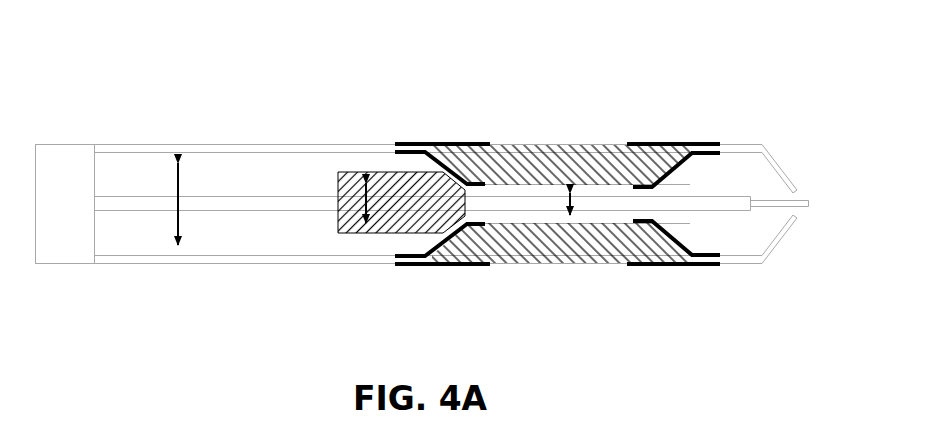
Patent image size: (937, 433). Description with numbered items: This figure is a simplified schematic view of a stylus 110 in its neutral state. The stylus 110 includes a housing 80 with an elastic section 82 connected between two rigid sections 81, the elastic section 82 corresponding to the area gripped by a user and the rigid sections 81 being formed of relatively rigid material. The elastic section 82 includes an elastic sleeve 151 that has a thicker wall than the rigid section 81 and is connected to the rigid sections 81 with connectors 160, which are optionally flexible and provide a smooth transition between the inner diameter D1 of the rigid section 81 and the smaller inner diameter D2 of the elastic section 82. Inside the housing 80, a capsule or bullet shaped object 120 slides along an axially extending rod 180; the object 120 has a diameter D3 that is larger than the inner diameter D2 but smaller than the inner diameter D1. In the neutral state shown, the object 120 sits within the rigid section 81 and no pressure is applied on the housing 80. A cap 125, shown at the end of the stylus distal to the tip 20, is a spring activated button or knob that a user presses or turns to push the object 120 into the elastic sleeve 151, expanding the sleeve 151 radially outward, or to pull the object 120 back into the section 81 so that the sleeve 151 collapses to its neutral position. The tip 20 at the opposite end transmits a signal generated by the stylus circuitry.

The stylus 110 is at (333, 92).
The rigid section 81 is at (154, 128).
The cap 125 is at (78, 262).
The housing 80 is at (260, 144).
The axially extending rod 180 is at (263, 212).
The tip 20 is at (810, 198).
The bullet shaped object 120 is at (393, 233).
The elastic section 82 is at (531, 128).
The elastic sleeve 151 is at (607, 160).
The connectors 160 is at (453, 150).
The inner diameter of rigid section D1 is at (193, 204).
The inner diameter of elastic section D2 is at (553, 202).
The diameter of bullet shaped object D3 is at (365, 204).